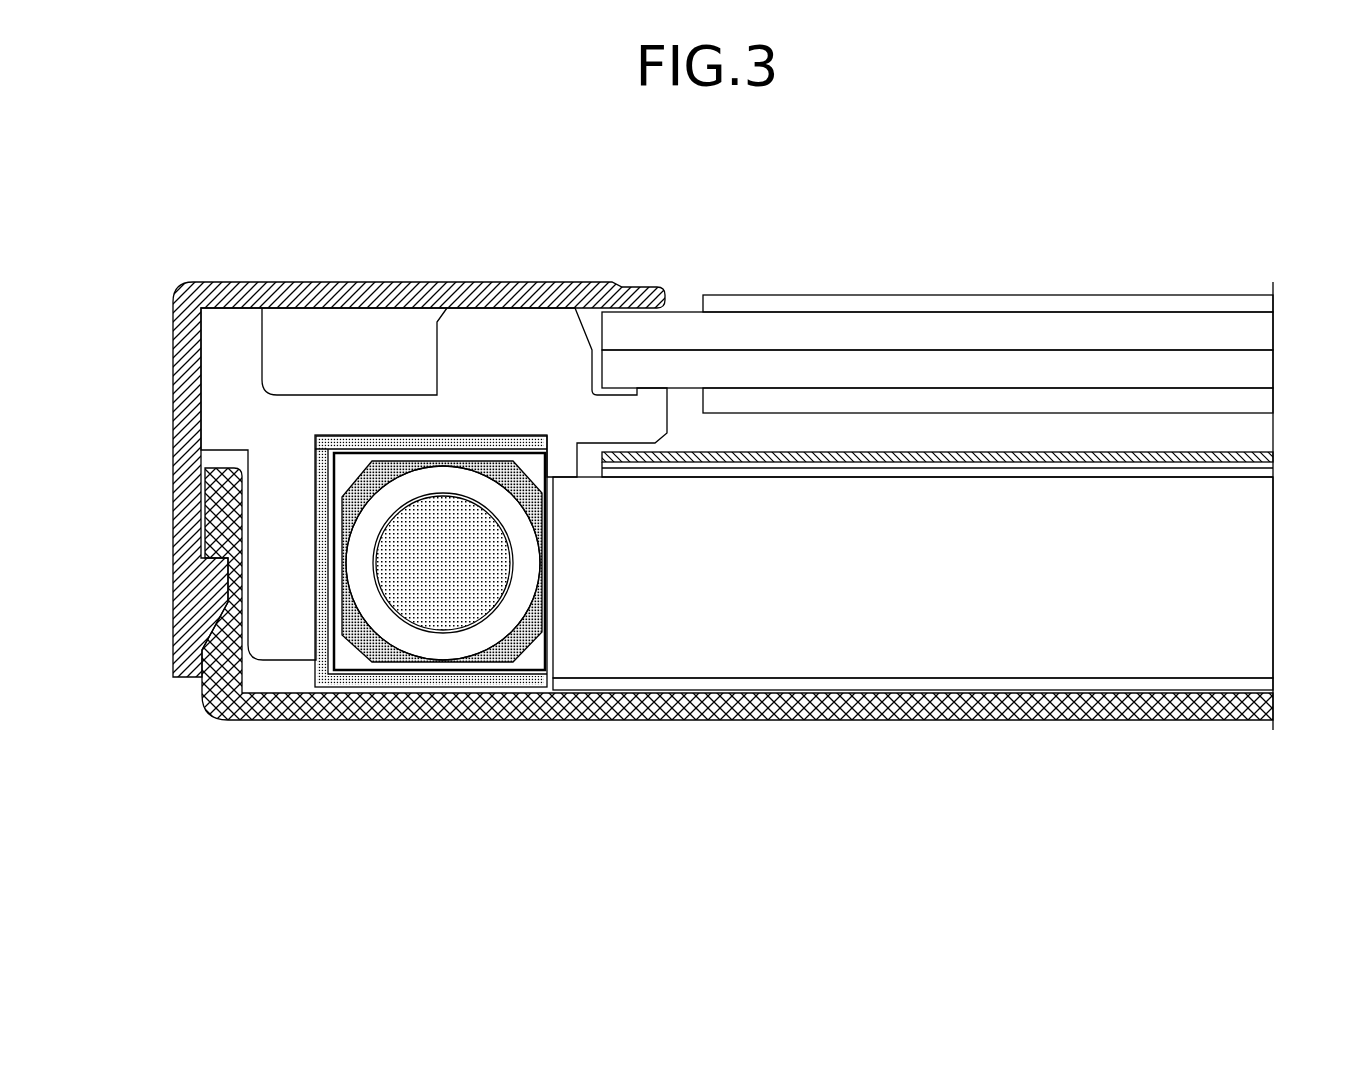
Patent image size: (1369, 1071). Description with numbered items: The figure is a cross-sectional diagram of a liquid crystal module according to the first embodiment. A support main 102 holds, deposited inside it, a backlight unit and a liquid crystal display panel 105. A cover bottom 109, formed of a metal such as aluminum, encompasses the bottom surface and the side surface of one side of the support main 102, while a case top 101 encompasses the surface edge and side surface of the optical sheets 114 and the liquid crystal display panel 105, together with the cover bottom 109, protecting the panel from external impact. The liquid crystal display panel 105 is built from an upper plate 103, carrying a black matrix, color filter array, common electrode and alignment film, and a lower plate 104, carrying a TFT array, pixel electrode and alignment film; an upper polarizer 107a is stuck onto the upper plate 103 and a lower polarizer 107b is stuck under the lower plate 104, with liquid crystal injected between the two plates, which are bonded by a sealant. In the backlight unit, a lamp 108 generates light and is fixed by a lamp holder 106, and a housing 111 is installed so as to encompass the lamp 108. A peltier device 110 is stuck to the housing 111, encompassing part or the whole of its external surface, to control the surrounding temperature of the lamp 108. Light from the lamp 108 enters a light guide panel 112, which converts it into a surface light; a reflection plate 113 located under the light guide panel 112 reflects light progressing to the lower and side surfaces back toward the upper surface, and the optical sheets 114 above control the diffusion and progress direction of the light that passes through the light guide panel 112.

The case top 101 is at (393, 297).
The support main 102 is at (237, 355).
The upper plate 103 is at (932, 332).
The lower plate 104 is at (840, 373).
The liquid crystal display panel 105 is at (948, 197).
The lamp holder 106 is at (517, 647).
The upper polarizer 107a is at (1117, 305).
The lower polarizer 107b is at (1180, 398).
The lamp 108 is at (443, 577).
The cover bottom 109 is at (1118, 717).
The peltier device 110 is at (325, 457).
The housing 111 is at (340, 670).
The light guide panel 112 is at (1255, 558).
The reflection plate 113 is at (1255, 683).
The optical sheets 114 is at (1291, 450).